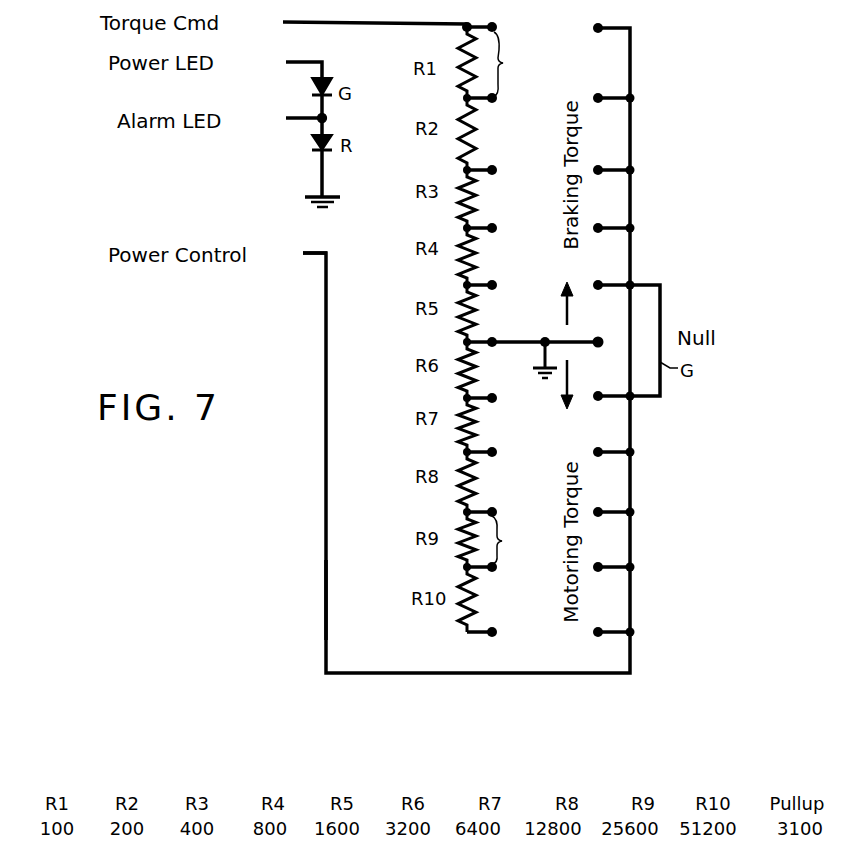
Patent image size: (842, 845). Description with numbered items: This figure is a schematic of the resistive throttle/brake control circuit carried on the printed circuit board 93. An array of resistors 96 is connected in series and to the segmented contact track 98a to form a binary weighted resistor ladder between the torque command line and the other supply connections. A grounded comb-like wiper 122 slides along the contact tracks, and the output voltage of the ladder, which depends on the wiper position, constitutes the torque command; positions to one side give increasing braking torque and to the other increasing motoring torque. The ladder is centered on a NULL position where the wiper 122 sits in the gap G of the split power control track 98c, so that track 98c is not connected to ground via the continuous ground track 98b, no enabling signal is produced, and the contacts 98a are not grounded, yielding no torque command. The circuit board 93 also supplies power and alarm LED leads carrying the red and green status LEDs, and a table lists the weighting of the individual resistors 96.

The resistors 96 is at (462, 78).
The segmented contact track 98a is at (514, 298).
The continuous ground track 98b is at (545, 340).
The split power control track 98c is at (326, 253).
The wiper 122 is at (572, 338).
The printed circuit board 93 is at (308, 590).